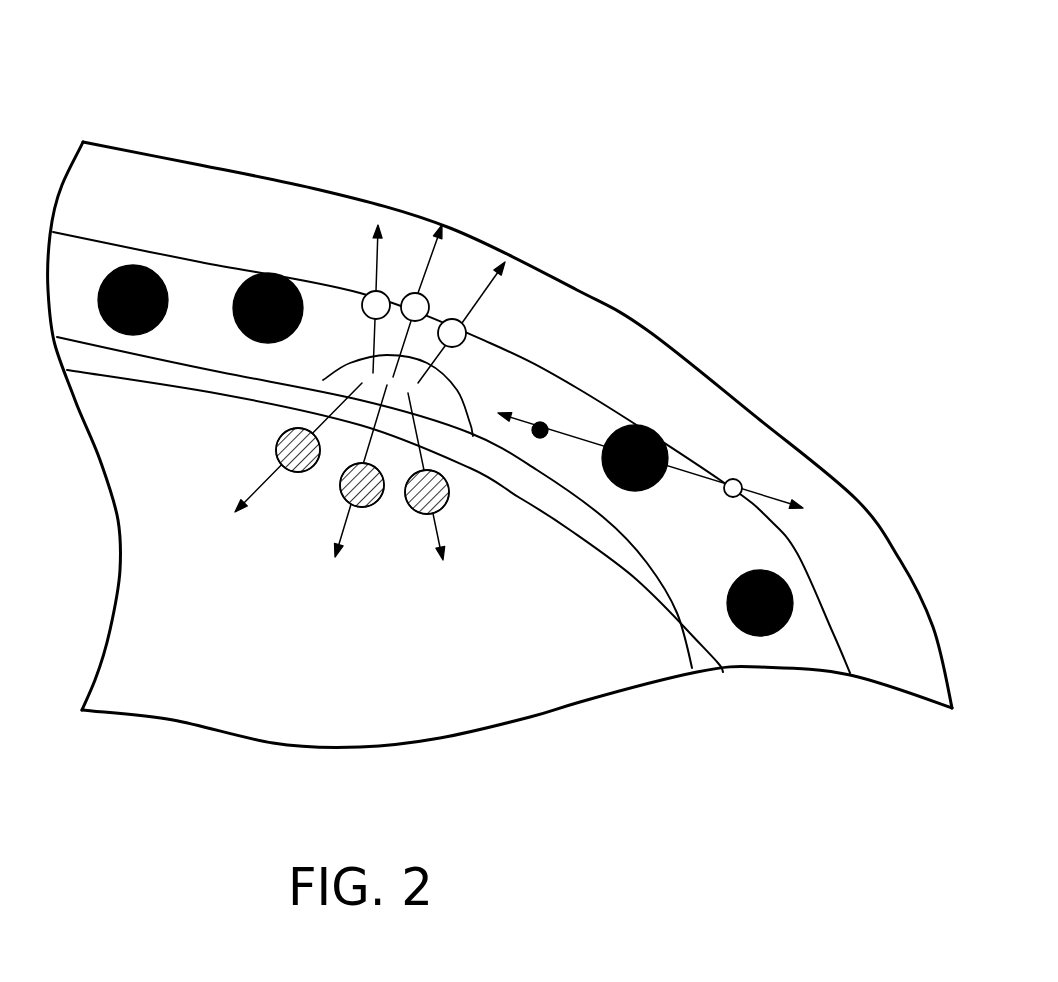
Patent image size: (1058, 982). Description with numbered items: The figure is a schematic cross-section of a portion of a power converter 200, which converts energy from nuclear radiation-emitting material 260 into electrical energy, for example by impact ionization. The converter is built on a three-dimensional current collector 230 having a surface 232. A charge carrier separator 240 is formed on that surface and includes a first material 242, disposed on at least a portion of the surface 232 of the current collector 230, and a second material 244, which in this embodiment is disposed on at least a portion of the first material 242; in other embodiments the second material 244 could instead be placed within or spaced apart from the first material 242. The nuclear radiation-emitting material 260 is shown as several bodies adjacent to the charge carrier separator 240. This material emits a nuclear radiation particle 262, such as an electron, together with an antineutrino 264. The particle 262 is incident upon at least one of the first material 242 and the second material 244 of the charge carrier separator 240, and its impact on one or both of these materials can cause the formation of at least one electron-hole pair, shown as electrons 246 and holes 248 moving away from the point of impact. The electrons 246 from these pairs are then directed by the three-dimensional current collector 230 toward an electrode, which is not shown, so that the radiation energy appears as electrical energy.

The power converter 200 is at (586, 78).
The three-dimensional current collector 230 is at (580, 704).
The surface 232 is at (567, 517).
The charge carrier separator 240 is at (497, 489).
The first material 242 is at (712, 675).
The second material 244 is at (333, 372).
The electrons 246 is at (410, 505).
The holes 248 is at (465, 333).
The nuclear radiation-emitting material 260 is at (153, 270).
The nuclear radiation particle 262 is at (542, 420).
The antineutrino 264 is at (732, 479).